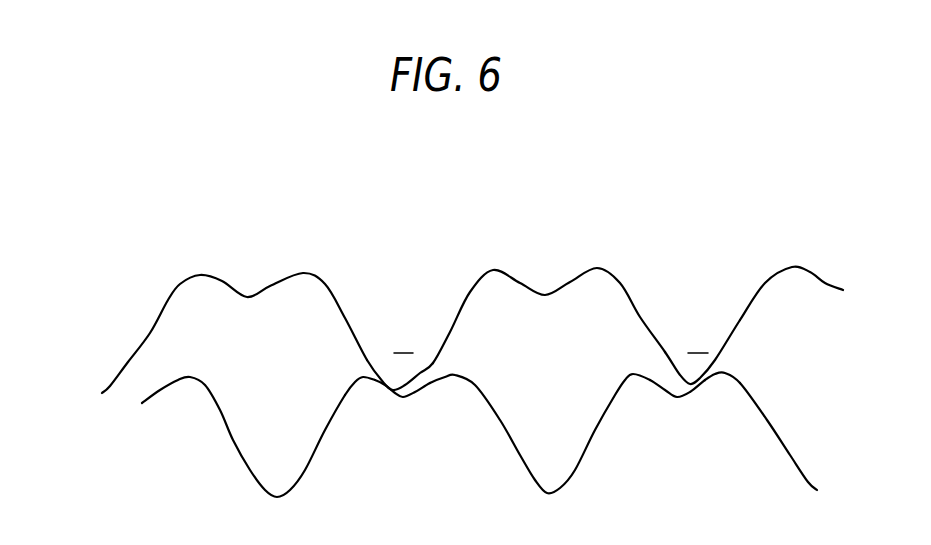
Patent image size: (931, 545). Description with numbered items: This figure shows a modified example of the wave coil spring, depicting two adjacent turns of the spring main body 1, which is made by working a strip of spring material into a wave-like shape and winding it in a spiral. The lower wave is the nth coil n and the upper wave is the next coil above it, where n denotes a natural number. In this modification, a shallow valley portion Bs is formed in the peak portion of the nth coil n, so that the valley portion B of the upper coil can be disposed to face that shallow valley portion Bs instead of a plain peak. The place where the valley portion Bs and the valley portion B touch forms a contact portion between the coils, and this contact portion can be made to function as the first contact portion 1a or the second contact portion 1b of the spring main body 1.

The spring main body 1 is at (490, 262).
The first contact portion 1a is at (718, 377).
The second contact portion 1b is at (385, 384).
The valley portion B is at (553, 355).
The shallow valley portion Bs is at (421, 397).
The nth coil n is at (232, 439).